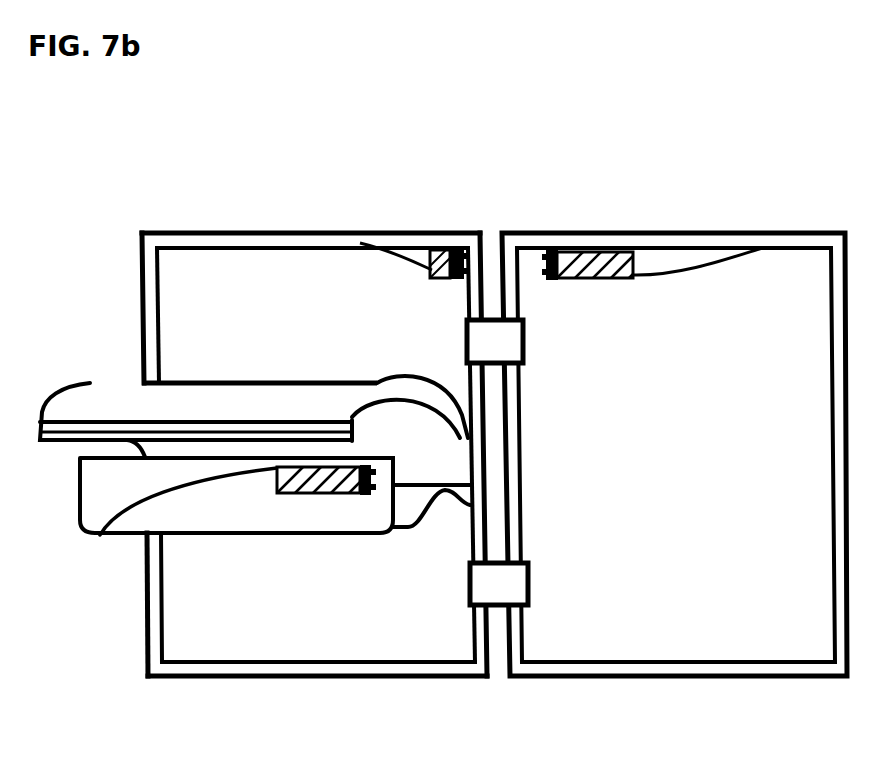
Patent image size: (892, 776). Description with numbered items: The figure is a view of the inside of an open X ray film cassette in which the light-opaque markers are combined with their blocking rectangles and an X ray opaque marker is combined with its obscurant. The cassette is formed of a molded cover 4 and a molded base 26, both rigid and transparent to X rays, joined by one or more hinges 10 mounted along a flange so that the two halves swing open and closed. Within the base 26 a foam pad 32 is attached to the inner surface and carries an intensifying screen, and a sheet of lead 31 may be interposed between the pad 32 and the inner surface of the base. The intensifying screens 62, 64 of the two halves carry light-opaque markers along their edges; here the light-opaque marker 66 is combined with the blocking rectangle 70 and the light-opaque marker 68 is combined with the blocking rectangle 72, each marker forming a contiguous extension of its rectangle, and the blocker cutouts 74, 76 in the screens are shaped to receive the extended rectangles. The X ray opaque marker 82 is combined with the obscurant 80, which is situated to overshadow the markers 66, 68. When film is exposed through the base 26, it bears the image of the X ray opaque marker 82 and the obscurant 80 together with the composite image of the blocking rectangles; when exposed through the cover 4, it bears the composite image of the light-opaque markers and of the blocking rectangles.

The cover 4 is at (707, 678).
The hinges 10 is at (497, 462).
The base 26 is at (335, 678).
The sheet of lead 31 is at (259, 358).
The foam pad 32 is at (125, 403).
The intensifying screen 62 is at (251, 596).
The intensifying screen 64 is at (683, 534).
The light-opaque marker 66 is at (549, 250).
The light-opaque marker 68 is at (366, 496).
The blocking rectangle 70 is at (605, 253).
The blocking rectangle 72 is at (295, 495).
The blocker cutout 74 is at (768, 247).
The blocker cutout 76 is at (100, 535).
The obscurant 80 is at (360, 241).
The X ray opaque marker 82 is at (463, 249).